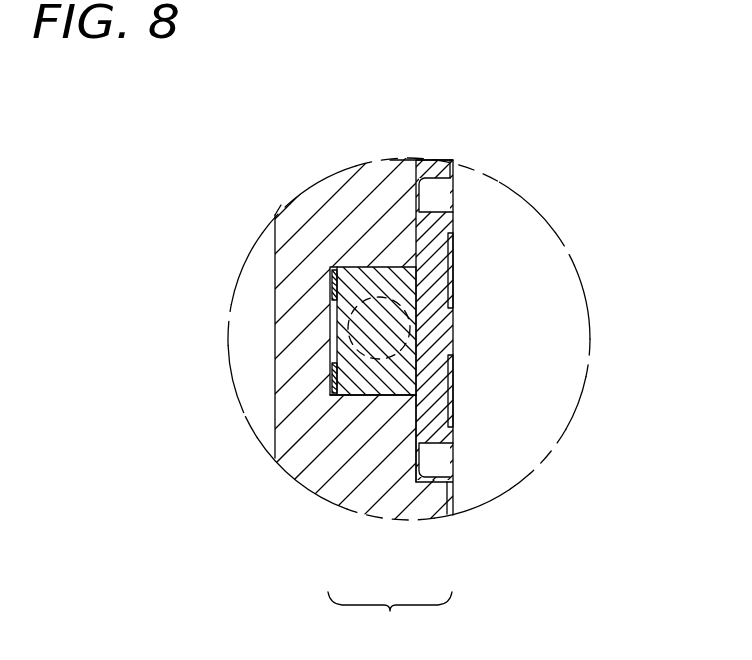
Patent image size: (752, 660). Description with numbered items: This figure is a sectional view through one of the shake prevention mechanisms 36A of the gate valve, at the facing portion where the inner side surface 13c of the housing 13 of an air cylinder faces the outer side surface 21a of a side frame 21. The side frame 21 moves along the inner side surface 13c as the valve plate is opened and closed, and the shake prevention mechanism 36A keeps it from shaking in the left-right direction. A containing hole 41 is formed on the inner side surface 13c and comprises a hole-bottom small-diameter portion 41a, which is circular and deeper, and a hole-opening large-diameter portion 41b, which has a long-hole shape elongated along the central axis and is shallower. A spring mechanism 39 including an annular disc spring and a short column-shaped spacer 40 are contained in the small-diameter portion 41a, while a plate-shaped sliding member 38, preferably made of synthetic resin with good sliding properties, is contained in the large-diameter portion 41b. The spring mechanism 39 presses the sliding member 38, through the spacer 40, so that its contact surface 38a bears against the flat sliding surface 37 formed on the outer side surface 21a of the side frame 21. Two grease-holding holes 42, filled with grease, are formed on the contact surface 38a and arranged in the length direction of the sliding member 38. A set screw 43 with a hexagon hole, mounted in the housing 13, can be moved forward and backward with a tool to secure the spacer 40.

The housing 13 is at (318, 226).
The inner side surface 13c is at (463, 494).
The side frame 21 is at (525, 291).
The outer side surface 21a is at (442, 170).
The shake prevention mechanism 36A is at (488, 185).
The sliding surface 37 is at (410, 208).
The sliding member 38 is at (433, 328).
The contact surface 38a is at (457, 445).
The spring mechanism 39 is at (333, 288).
The spacer 40 is at (352, 367).
The containing hole 41 is at (390, 617).
The small-diameter portion 41a is at (376, 393).
The large-diameter portion 41b is at (437, 457).
The grease-holding hole 42 is at (457, 253).
The set screw 43 is at (350, 313).